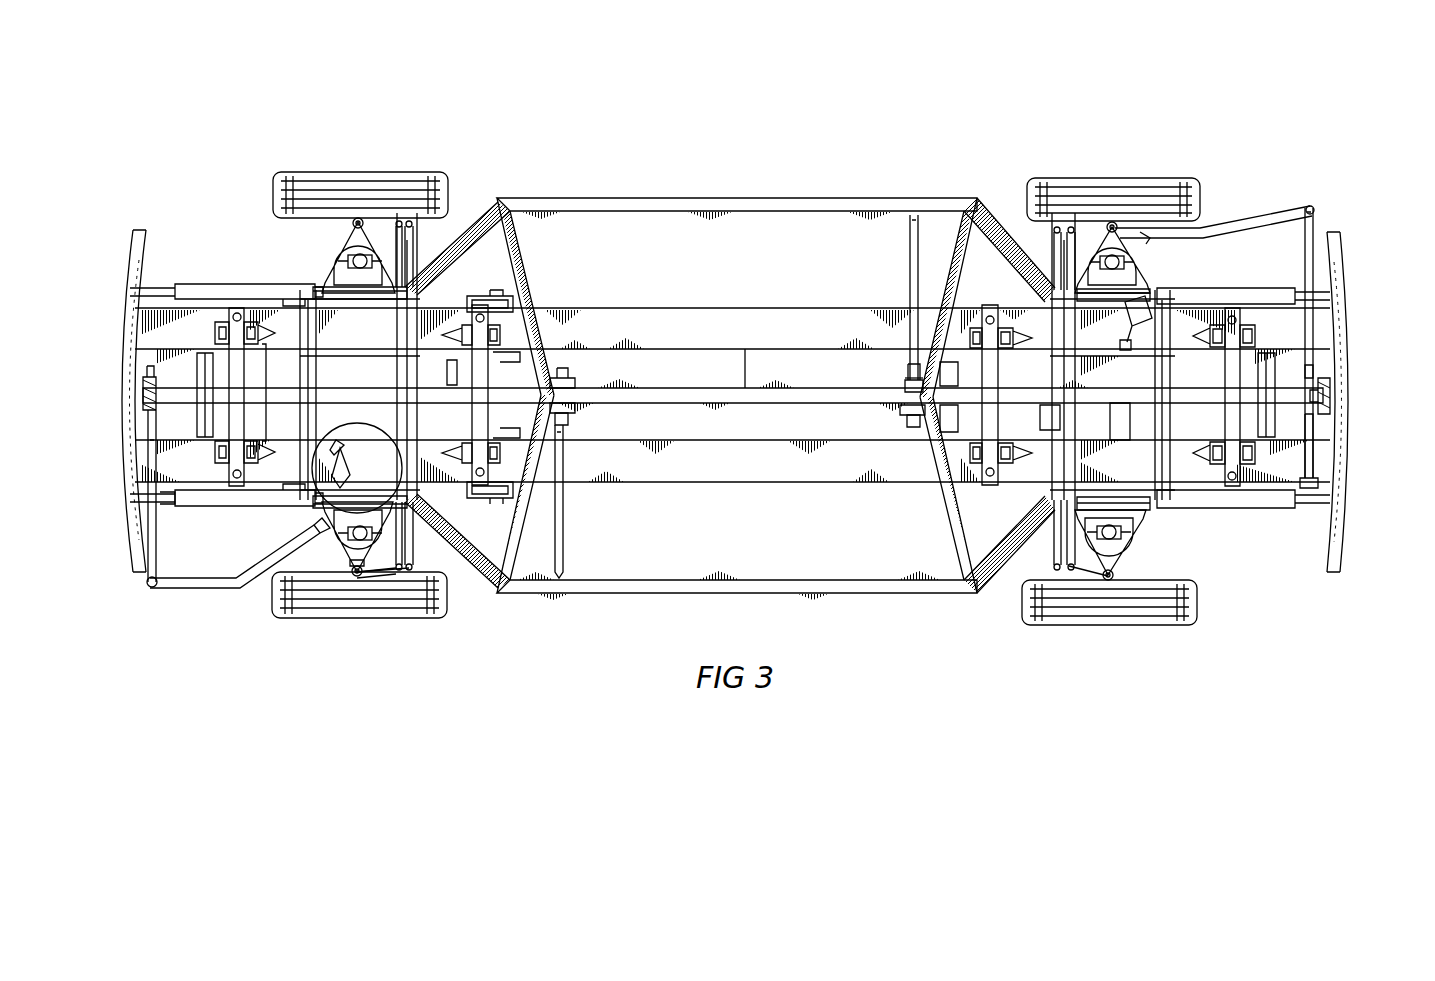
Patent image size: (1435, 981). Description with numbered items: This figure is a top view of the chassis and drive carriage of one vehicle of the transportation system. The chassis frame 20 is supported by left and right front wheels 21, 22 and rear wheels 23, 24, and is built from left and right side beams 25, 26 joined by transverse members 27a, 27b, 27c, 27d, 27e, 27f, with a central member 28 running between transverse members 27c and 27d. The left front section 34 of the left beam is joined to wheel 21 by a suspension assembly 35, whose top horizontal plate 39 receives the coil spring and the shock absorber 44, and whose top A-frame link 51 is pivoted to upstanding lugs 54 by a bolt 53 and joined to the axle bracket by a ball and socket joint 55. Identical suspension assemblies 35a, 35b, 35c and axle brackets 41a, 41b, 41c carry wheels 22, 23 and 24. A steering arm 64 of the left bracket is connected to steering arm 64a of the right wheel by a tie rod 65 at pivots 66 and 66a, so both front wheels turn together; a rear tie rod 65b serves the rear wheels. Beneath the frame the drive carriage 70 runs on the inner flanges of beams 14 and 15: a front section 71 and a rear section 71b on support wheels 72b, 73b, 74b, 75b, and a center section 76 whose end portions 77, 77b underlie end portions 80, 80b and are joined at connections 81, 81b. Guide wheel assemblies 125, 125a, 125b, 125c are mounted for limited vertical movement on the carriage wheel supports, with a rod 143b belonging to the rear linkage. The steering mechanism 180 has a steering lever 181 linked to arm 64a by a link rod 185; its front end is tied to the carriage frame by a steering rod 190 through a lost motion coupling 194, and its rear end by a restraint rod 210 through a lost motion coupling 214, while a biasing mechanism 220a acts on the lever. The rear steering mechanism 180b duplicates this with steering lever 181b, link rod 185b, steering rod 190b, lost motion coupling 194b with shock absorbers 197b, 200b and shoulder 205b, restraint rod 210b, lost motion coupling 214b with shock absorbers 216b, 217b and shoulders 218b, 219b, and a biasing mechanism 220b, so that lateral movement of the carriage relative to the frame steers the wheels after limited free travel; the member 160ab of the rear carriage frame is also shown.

The beam 14 is at (685, 308).
The beam 15 is at (692, 483).
The chassis frame 20 is at (720, 201).
The left front wheel 21 is at (272, 612).
The right front wheel 22 is at (270, 193).
The rear wheel 23 is at (1040, 176).
The rear wheel 24 is at (1132, 626).
The left side beam 25 is at (893, 594).
The right side beam 26 is at (650, 198).
The transverse member 27a is at (317, 372).
The transverse member 27b is at (397, 328).
The transverse member 27c is at (524, 262).
The transverse member 27d is at (935, 258).
The transverse member 27e is at (1078, 348).
The transverse member 27f is at (1154, 375).
The central member 28 is at (702, 388).
The left front section 34 is at (212, 510).
The suspension assembly 35 is at (350, 520).
The suspension assembly 35a is at (338, 262).
The suspension assembly 35b is at (1130, 267).
The suspension assembly 35c is at (1133, 544).
The top horizontal plate 39 is at (430, 556).
The axle bracket 41a is at (348, 226).
The axle bracket 41b is at (1117, 224).
The axle bracket 41c is at (1119, 576).
The shock absorber 44 is at (356, 500).
The top A-frame link 51 is at (354, 577).
The shaft or bolt 53 is at (226, 508).
The upstanding lugs 54 is at (357, 459).
The ball and socket joint 55 is at (353, 578).
The steering arm 64 is at (378, 576).
The steering arm 64a is at (397, 222).
The tie rod 65 is at (430, 248).
The tie rod 65b is at (1071, 227).
The pivotal connection 66 is at (405, 572).
The pivotal connection 66a is at (409, 222).
The drive carriage 70 is at (815, 348).
The front section 71 is at (197, 356).
The rear section 71b is at (1260, 455).
The support wheel 72b is at (950, 440).
The support wheel 73b is at (995, 340).
The support wheel 74b is at (1258, 338).
The support wheel 75b is at (1298, 509).
The center section 76 is at (746, 349).
The end portion 77 is at (518, 352).
The end portion 77b is at (916, 290).
The end portion 80 is at (520, 392).
The end portion 80b is at (945, 420).
The connection 81 is at (568, 418).
The connection 81b is at (1012, 442).
The guide wheel assembly 125 is at (238, 495).
The guide wheel assembly 125a is at (212, 289).
The guide wheel assembly 125b is at (468, 290).
The guide wheel assembly 125c is at (503, 550).
The rod 143b is at (898, 393).
The bracket 160ab is at (1120, 403).
The steering mechanism 180 is at (157, 598).
The steering mechanism 180b is at (1300, 198).
The steering lever 181 is at (182, 580).
The steering lever 181b is at (1240, 220).
The link rod 185 is at (415, 533).
The link rod 185b is at (1022, 230).
The steering rod 190 is at (146, 576).
The steering rod 190b is at (914, 214).
The lost motion coupling 194 is at (140, 398).
The lost motion coupling 194b is at (898, 411).
The shock absorber 197b is at (905, 416).
The shock absorber 200b is at (907, 383).
The shoulder 205b is at (906, 388).
The restraint rod 210 is at (565, 548).
The restraint rod 210b is at (1304, 268).
The lost motion coupling 214 is at (574, 385).
The lost motion coupling 214b is at (1332, 400).
The shock absorber 216b is at (1288, 444).
The shock absorber 217b is at (1318, 382).
The shoulder 218b is at (1325, 415).
The shoulder 219b is at (1330, 392).
The biasing mechanism 220a is at (312, 532).
The biasing mechanism 220b is at (1162, 290).